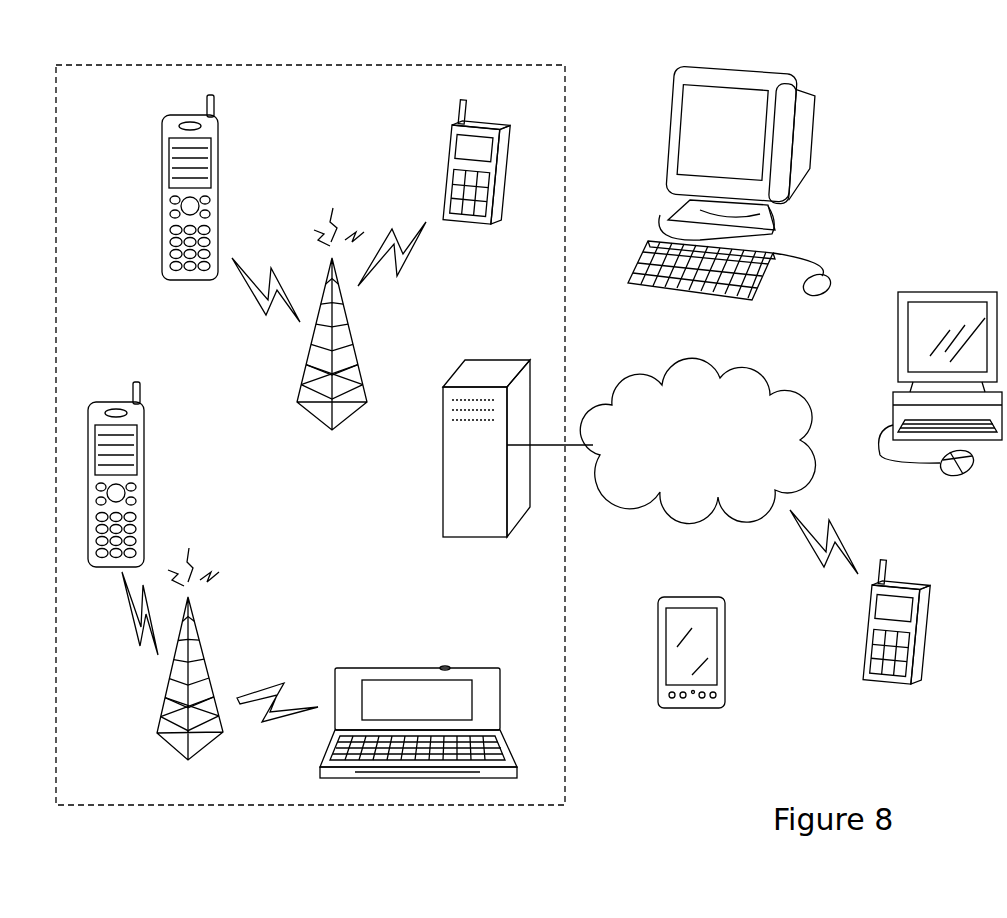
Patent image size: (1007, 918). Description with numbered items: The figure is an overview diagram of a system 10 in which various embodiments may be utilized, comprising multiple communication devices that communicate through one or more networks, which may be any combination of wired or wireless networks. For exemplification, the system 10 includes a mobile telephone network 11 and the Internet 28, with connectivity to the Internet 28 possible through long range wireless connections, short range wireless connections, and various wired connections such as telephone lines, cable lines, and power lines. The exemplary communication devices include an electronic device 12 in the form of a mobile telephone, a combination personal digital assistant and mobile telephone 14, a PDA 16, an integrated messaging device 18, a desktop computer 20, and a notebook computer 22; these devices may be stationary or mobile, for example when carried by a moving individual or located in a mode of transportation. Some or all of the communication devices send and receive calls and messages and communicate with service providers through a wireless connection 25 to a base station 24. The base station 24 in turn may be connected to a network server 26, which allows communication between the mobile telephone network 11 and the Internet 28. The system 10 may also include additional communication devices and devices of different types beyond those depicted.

The system 10 is at (990, 542).
The mobile telephone network 11 is at (97, 104).
The electronic device 12 is at (220, 192).
The combination personal digital assistant and mobile telephone 14 is at (437, 667).
The PDA 16 is at (726, 650).
The integrated messaging device 18 is at (450, 170).
The desktop computer 20 is at (813, 122).
The notebook computer 22 is at (950, 292).
The base station 24 is at (350, 338).
The wireless connection 25 is at (136, 650).
The network server 26 is at (444, 452).
The Internet 28 is at (738, 380).